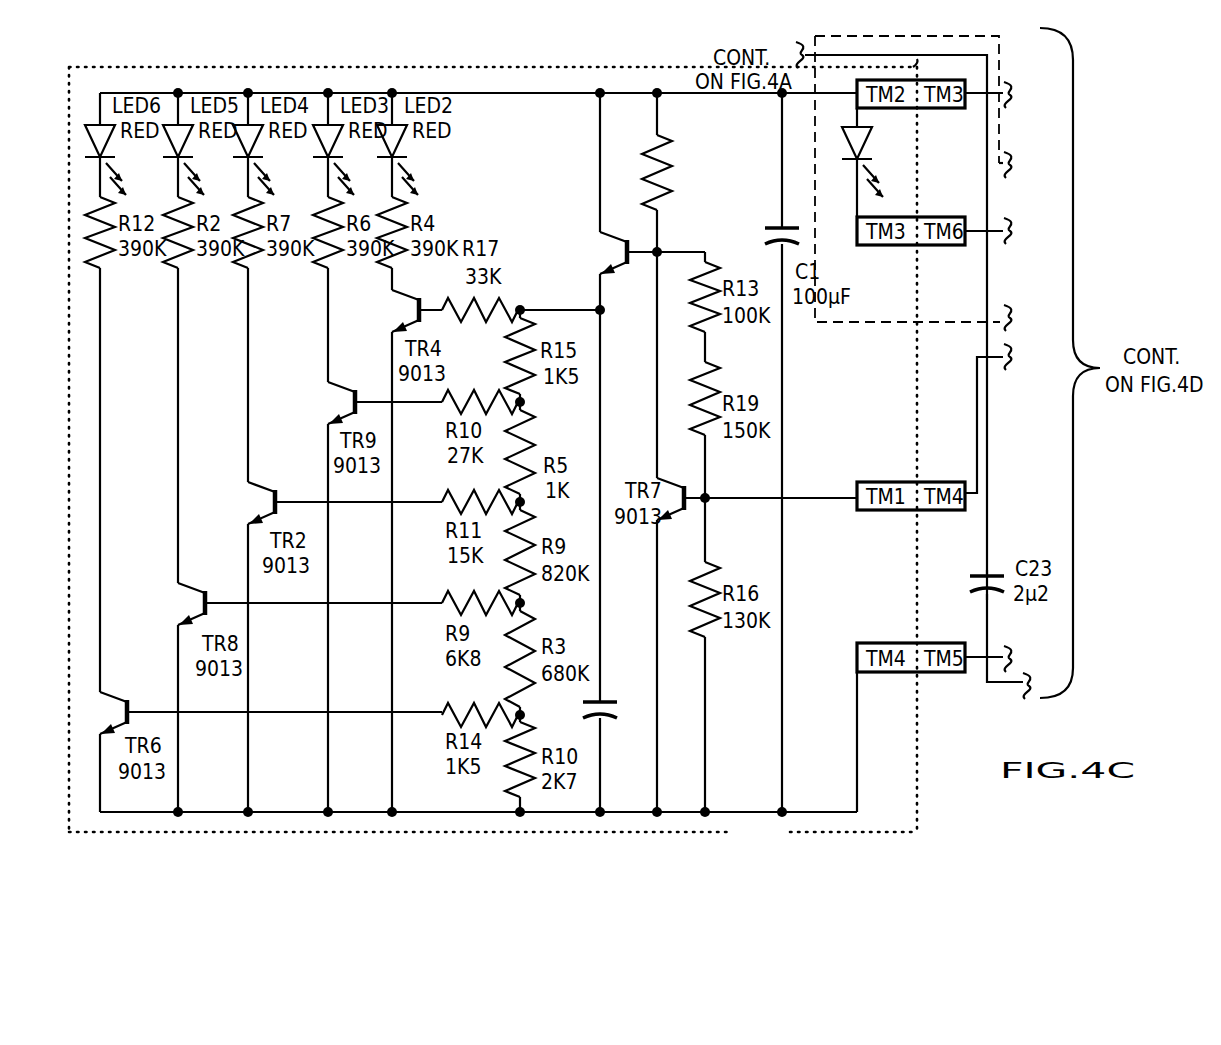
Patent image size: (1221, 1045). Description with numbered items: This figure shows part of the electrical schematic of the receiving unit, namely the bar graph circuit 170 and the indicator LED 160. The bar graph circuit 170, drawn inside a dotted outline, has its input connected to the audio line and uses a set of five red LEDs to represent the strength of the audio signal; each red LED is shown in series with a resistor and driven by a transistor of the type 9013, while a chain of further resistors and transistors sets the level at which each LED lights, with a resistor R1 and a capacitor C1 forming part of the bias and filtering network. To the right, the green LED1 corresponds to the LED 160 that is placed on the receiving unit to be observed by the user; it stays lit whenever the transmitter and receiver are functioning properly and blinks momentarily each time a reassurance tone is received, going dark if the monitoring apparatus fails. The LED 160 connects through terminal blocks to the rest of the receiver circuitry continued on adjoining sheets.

The LED 160 is at (868, 299).
The bar graph circuit 170 is at (493, 456).
The transistor TR3 9013 is at (631, 201).
The capacitor C1 is at (610, 739).
The resistor R1 is at (676, 172).
The green LED LED1 is at (833, 153).